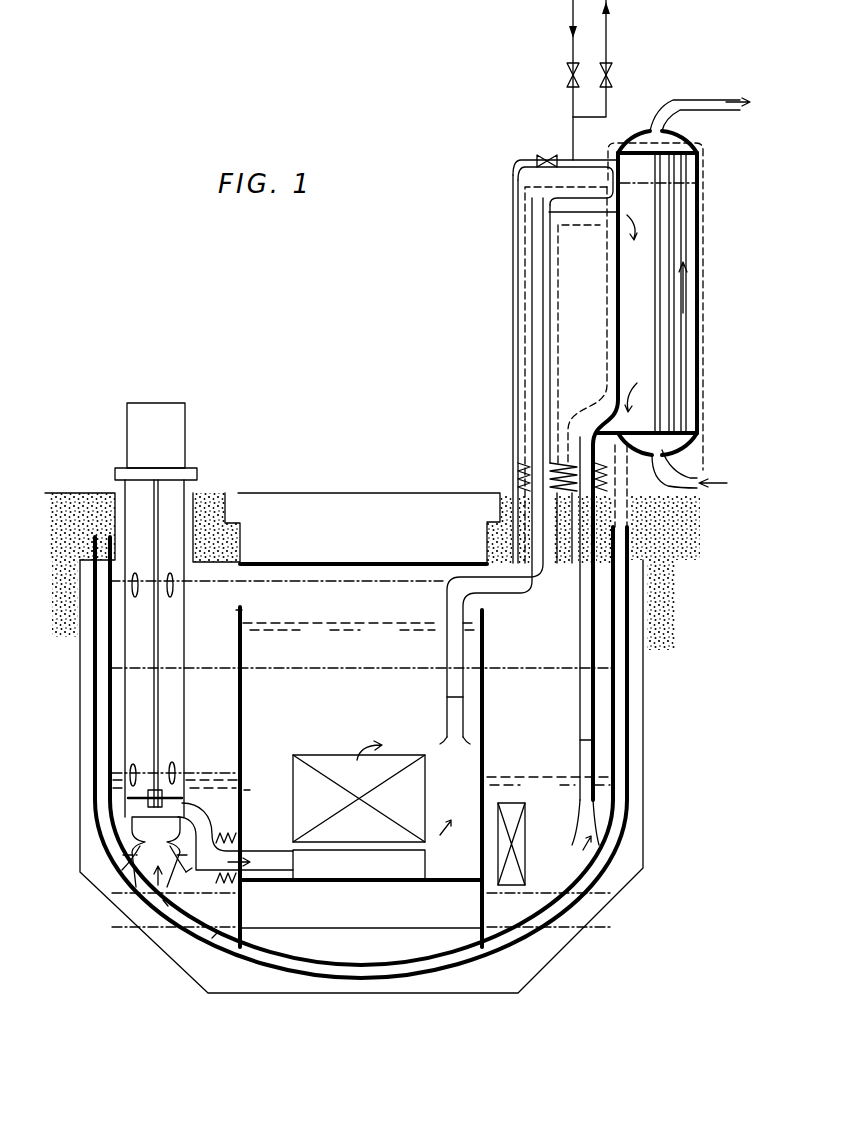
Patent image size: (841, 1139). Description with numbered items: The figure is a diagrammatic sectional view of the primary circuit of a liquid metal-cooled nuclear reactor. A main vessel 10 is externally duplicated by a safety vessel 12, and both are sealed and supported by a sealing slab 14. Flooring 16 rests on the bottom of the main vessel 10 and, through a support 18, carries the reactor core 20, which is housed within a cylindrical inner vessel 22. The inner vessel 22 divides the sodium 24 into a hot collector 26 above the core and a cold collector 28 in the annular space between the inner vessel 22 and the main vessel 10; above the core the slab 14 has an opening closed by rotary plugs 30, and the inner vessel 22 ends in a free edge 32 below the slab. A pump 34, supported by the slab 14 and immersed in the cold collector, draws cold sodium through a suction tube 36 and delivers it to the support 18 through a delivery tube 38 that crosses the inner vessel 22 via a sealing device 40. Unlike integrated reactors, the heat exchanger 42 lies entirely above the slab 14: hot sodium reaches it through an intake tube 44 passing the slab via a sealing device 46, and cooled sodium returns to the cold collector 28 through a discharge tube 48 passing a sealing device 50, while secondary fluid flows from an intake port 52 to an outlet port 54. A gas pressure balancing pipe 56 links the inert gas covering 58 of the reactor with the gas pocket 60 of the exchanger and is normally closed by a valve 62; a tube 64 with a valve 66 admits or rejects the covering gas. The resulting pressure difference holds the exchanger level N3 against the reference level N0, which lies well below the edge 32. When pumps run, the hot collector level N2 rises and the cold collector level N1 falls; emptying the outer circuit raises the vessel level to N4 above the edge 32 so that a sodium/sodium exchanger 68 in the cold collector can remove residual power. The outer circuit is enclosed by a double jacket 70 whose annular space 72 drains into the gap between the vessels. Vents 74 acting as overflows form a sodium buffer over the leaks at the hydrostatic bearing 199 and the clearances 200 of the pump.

The main vessel 10 is at (107, 663).
The safety vessel 12 is at (85, 692).
The sealing slab 14 is at (65, 498).
The flooring 16 is at (380, 916).
The support 18 is at (428, 862).
The reactor core 20 is at (428, 805).
The inner vessel 22 is at (243, 717).
The sodium 24 is at (190, 870).
The hot collector 26 is at (362, 714).
The cold collector 28 is at (247, 790).
The rotary plugs 30 is at (300, 498).
The free edge 32 is at (238, 612).
The pump 34 is at (123, 840).
The suction tube 36 is at (165, 900).
The delivery tube 38 is at (215, 935).
The sealing device 40 is at (242, 905).
The heat exchanger 42 is at (708, 352).
The intake tube 44 is at (537, 280).
The sealing device 46 is at (525, 470).
The discharge tube 48 is at (583, 725).
The sealing device 50 is at (570, 468).
The intake port 52 is at (683, 477).
The outlet port 54 is at (693, 100).
The gas pressure balancing pipe 56 is at (513, 345).
The inert gas covering 58 is at (349, 572).
The inert gas pocket 60 is at (688, 165).
The valve 62 is at (550, 150).
The tube 64 is at (568, 123).
The valve 66 is at (610, 73).
The sodium/sodium exchanger 68 is at (508, 802).
The double jacket 70 is at (704, 250).
The annular space 72 is at (697, 307).
The vent 74 is at (180, 593).
The hydrostatic bearing 199 is at (133, 820).
The clearances 200 is at (236, 806).
The sodium reference level N0 is at (520, 667).
The sodium level in cold collector N1 is at (220, 773).
The sodium level in hot collector N2 is at (313, 620).
The free sodium level in exchanger N3 is at (640, 183).
The sodium level after emptying N4 is at (380, 585).